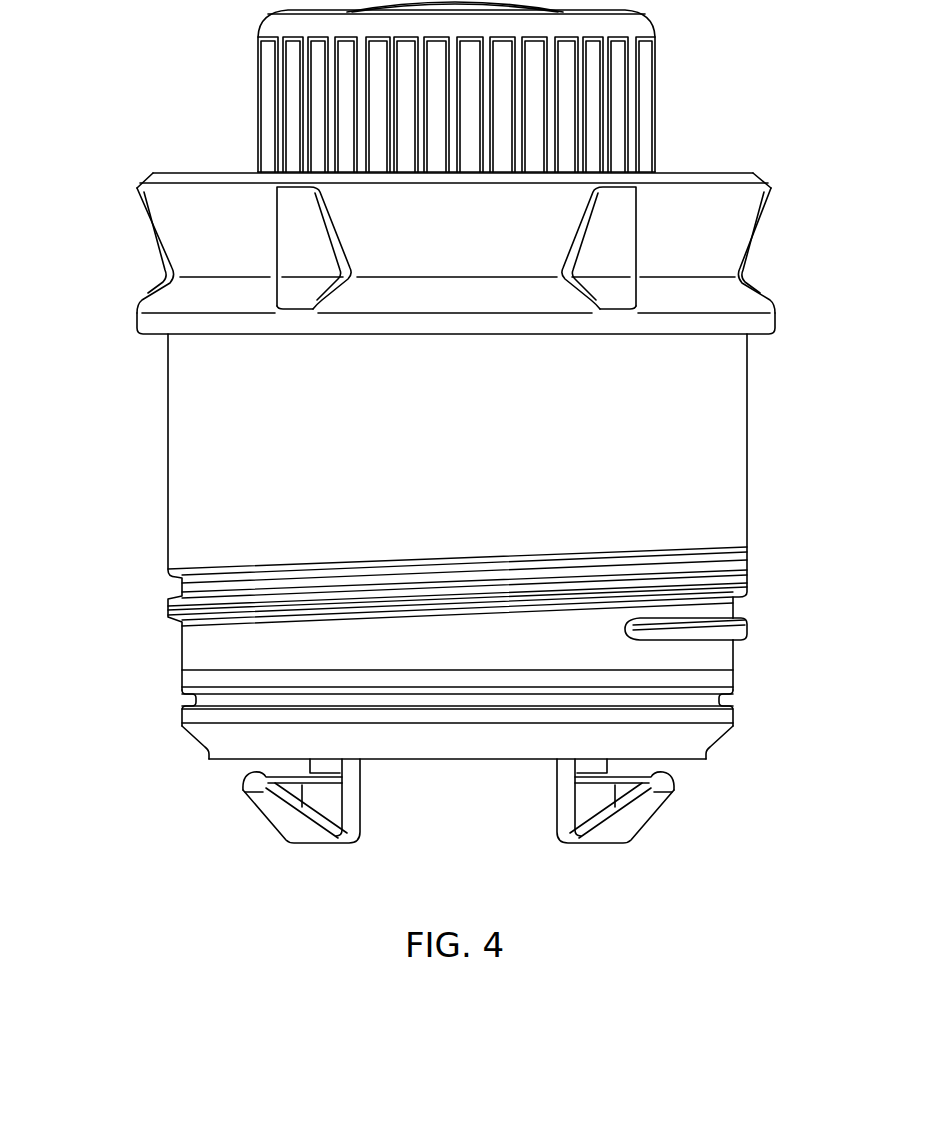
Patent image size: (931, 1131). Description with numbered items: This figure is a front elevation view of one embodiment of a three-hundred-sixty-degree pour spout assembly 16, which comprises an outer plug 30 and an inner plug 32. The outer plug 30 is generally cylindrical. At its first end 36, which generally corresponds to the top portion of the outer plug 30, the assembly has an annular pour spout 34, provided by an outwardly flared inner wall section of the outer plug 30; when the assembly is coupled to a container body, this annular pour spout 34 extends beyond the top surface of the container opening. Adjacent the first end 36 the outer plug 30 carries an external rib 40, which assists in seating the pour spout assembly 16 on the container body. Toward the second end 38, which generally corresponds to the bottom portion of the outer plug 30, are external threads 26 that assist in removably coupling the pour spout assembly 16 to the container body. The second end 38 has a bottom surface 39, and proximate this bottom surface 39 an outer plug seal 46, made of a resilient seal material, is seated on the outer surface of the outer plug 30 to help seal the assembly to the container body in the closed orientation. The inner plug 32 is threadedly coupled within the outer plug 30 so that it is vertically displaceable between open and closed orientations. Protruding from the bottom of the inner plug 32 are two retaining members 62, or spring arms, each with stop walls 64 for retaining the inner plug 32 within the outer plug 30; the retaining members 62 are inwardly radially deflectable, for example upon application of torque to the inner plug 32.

The pour spout assembly 16 is at (116, 714).
The external threads 26 is at (748, 625).
The outer plug 30 is at (748, 407).
The inner plug 32 is at (649, 69).
The annular pour spout 34 is at (748, 171).
The first end 36 is at (770, 205).
The second end 38 is at (733, 658).
The bottom surface 39 is at (700, 762).
The external rib 40 is at (152, 336).
The outer plug seal 46 is at (192, 731).
The retaining members 62 is at (310, 830).
The stop walls 64 is at (257, 773).